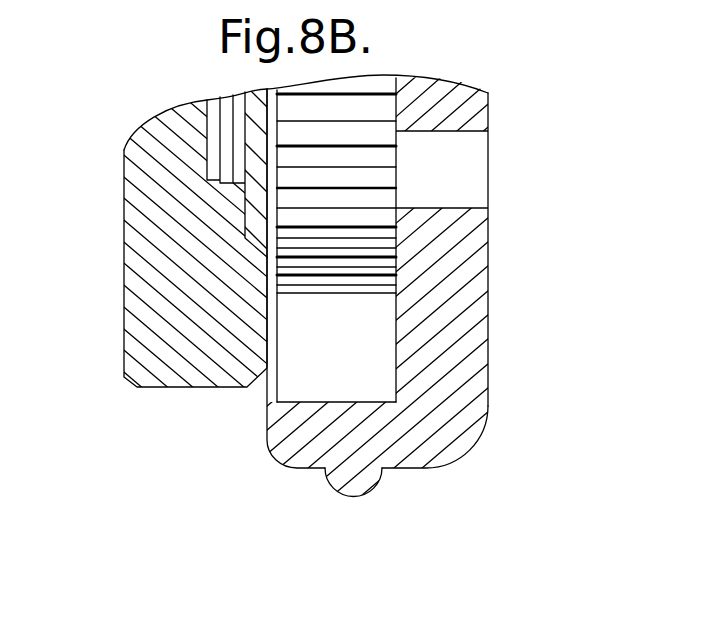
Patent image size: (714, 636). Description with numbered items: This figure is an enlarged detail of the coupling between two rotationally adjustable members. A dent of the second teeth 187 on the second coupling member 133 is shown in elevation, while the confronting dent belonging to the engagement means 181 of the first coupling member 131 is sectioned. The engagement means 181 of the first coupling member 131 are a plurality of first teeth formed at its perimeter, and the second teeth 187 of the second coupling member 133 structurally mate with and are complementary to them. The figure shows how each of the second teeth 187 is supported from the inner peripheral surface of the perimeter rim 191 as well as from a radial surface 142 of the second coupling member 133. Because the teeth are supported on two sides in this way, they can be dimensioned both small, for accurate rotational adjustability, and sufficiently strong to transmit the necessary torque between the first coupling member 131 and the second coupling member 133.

The first coupling member 131 is at (123, 365).
The engagement means 181 is at (257, 100).
The radial surface 142 is at (487, 300).
The second coupling member 133 is at (473, 443).
The second teeth 187 is at (323, 375).
The perimeter rim 191 is at (305, 448).